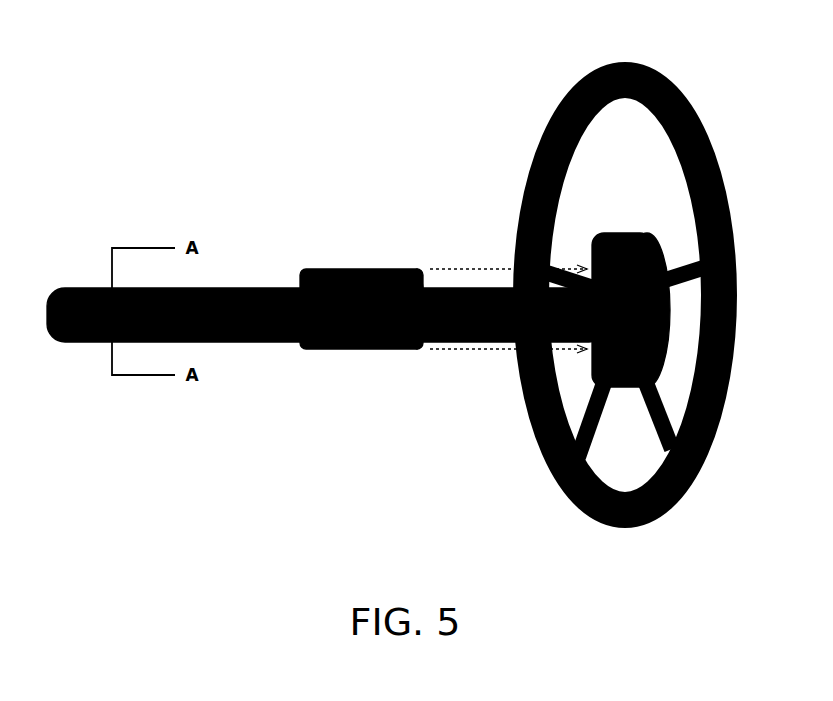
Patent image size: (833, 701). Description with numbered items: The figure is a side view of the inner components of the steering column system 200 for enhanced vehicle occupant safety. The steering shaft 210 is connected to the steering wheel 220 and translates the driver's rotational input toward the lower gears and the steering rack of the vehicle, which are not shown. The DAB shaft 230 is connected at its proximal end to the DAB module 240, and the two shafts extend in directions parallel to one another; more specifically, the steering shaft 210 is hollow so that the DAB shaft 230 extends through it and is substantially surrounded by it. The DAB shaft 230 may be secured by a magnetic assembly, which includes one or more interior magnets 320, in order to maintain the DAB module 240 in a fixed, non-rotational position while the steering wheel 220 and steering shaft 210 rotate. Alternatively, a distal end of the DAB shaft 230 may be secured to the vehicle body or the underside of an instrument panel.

The steering column system 200 is at (437, 255).
The steering shaft 210 is at (380, 323).
The steering wheel 220 is at (523, 418).
The DAB shaft 230 is at (470, 287).
The DAB module 240 is at (583, 300).
The interior magnets 320 is at (193, 292).